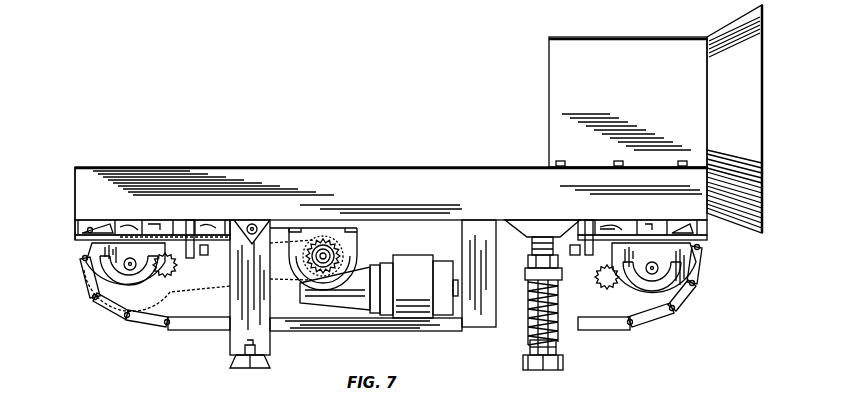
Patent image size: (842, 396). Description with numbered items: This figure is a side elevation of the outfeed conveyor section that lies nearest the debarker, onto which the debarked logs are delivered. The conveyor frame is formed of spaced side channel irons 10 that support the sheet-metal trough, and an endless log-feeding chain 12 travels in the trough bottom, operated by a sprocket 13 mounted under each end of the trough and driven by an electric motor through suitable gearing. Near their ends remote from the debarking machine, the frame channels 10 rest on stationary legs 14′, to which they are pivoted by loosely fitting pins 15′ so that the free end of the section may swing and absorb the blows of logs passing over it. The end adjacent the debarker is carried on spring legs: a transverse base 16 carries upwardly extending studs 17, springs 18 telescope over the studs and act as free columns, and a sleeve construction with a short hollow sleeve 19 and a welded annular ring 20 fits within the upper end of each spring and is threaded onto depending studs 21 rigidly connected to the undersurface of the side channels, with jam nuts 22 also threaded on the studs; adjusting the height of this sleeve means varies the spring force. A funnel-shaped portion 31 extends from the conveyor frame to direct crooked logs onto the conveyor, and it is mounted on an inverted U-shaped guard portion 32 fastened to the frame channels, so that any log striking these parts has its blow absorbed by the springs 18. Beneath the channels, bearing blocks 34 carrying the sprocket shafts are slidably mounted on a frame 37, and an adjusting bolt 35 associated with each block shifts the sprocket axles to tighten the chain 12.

The channel irons 10 is at (449, 201).
The endless log-feeding chain 12 is at (171, 324).
The sprocket 13 is at (180, 268).
The stationary legs 14′ is at (268, 340).
The loosely fitting pins 15′ is at (252, 243).
The transverse base 16 is at (564, 360).
The studs 17 is at (556, 344).
The springs 18 is at (553, 310).
The hollow sleeve 19 is at (530, 295).
The annular ring 20 is at (526, 274).
The depending bolts or studs 21 is at (542, 229).
The jam nuts 22 is at (530, 259).
The funnel-shaped portion 31 is at (757, 91).
The inverted U-shaped guard portion 32 is at (636, 96).
The bearing blocks 34 is at (156, 256).
The adjusting bolt 35 is at (206, 248).
The frame 37 is at (81, 238).